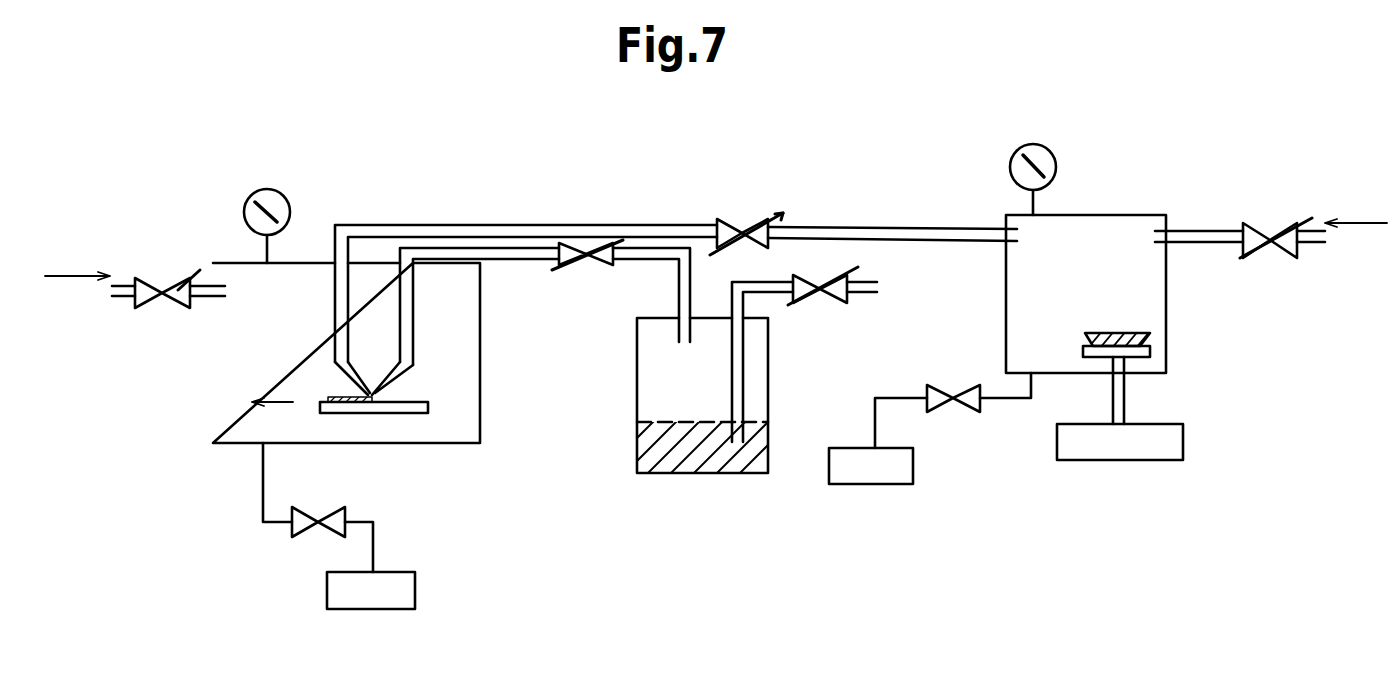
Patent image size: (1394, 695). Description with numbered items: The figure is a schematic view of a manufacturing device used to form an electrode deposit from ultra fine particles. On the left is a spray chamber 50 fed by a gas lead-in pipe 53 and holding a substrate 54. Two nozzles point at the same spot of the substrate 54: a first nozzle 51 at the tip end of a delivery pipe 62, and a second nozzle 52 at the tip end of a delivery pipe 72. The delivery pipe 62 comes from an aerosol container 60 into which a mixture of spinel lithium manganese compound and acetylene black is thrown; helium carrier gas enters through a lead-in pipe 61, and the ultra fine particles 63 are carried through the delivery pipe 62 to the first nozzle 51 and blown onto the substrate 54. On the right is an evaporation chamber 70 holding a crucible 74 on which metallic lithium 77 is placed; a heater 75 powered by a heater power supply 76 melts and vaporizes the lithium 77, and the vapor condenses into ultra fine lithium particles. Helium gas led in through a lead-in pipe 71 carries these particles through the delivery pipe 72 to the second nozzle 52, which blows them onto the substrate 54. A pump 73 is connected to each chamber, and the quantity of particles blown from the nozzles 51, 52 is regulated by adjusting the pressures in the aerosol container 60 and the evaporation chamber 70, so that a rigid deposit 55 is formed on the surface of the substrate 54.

The spray chamber 50 is at (480, 320).
The first nozzle 51 is at (407, 370).
The second nozzle 52 is at (338, 372).
The gas lead-in pipe 53 is at (198, 297).
The substrate 54 is at (403, 413).
The deposit 55 is at (352, 413).
The aerosol container 60 is at (636, 393).
The lead-in pipe 61 is at (767, 293).
The delivery pipe 62 is at (623, 260).
The ultra fine particles 63 is at (692, 462).
The evaporation chamber 70 is at (1005, 282).
The lead-in pipe 71 is at (1207, 230).
The delivery pipe 72 is at (940, 228).
The pump 73 is at (403, 587).
The crucible 74 is at (1137, 348).
The heater 75 is at (1135, 353).
The heater power supply 76 is at (1130, 450).
The lithium 77 is at (1123, 332).